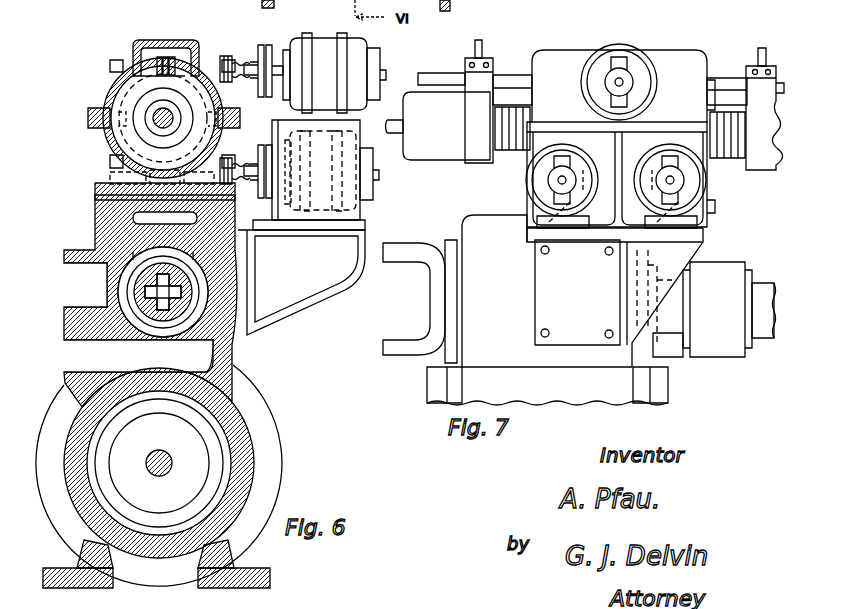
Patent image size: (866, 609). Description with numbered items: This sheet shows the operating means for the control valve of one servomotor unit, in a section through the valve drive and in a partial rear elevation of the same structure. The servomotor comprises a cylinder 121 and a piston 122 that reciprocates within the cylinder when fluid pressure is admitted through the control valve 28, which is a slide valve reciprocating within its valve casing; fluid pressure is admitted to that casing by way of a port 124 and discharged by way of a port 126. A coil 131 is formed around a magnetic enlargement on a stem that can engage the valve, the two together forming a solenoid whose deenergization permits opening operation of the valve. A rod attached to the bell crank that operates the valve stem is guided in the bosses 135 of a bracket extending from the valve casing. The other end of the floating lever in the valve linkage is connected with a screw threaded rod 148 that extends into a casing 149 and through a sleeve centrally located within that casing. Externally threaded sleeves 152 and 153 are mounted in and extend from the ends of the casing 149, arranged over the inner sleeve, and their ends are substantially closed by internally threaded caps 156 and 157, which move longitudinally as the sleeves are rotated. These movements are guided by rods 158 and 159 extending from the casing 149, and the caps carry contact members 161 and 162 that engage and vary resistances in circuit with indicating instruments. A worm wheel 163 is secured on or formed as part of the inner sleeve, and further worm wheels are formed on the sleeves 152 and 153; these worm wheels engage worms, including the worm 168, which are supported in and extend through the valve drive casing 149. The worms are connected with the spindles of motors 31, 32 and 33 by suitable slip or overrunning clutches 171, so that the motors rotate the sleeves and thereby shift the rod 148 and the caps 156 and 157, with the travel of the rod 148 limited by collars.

In FIG. 6, the control valve 28 is at (150, 321).
In FIG. 6, the motor 31 is at (362, 204).
In FIG. 7, the motor 31 is at (700, 190).
In FIG. 6, the motor 32 is at (322, 38).
In FIG. 7, the motor 32 is at (631, 46).
In FIG. 7, the motor 33 is at (528, 181).
In FIG. 6, the cylinder 121 is at (63, 500).
In FIG. 7, the cylinder 121 is at (558, 404).
In FIG. 6, the piston 122 is at (262, 421).
In FIG. 6, the port 124 is at (68, 354).
In FIG. 6, the port 126 is at (68, 286).
In FIG. 7, the coil 131 is at (730, 262).
In FIG. 7, the bosses 135 is at (402, 247).
In FIG. 7, the screw threaded rod 148 is at (395, 121).
In FIG. 6, the casing 149 is at (115, 140).
In FIG. 7, the externally threaded sleeve 152 is at (722, 158).
In FIG. 7, the externally threaded sleeve 153 is at (505, 150).
In FIG. 7, the internally threaded cap 156 is at (758, 166).
In FIG. 7, the internally threaded cap 157 is at (426, 160).
In FIG. 7, the rod 158 is at (733, 84).
In FIG. 7, the rod 159 is at (445, 75).
In FIG. 7, the contact member 161 is at (762, 48).
In FIG. 7, the contact member 162 is at (482, 44).
In FIG. 6, the worm wheel 163 is at (128, 98).
In FIG. 6, the worm 168 is at (170, 57).
In FIG. 6, the slip or overrunning clutch 171 is at (228, 56).